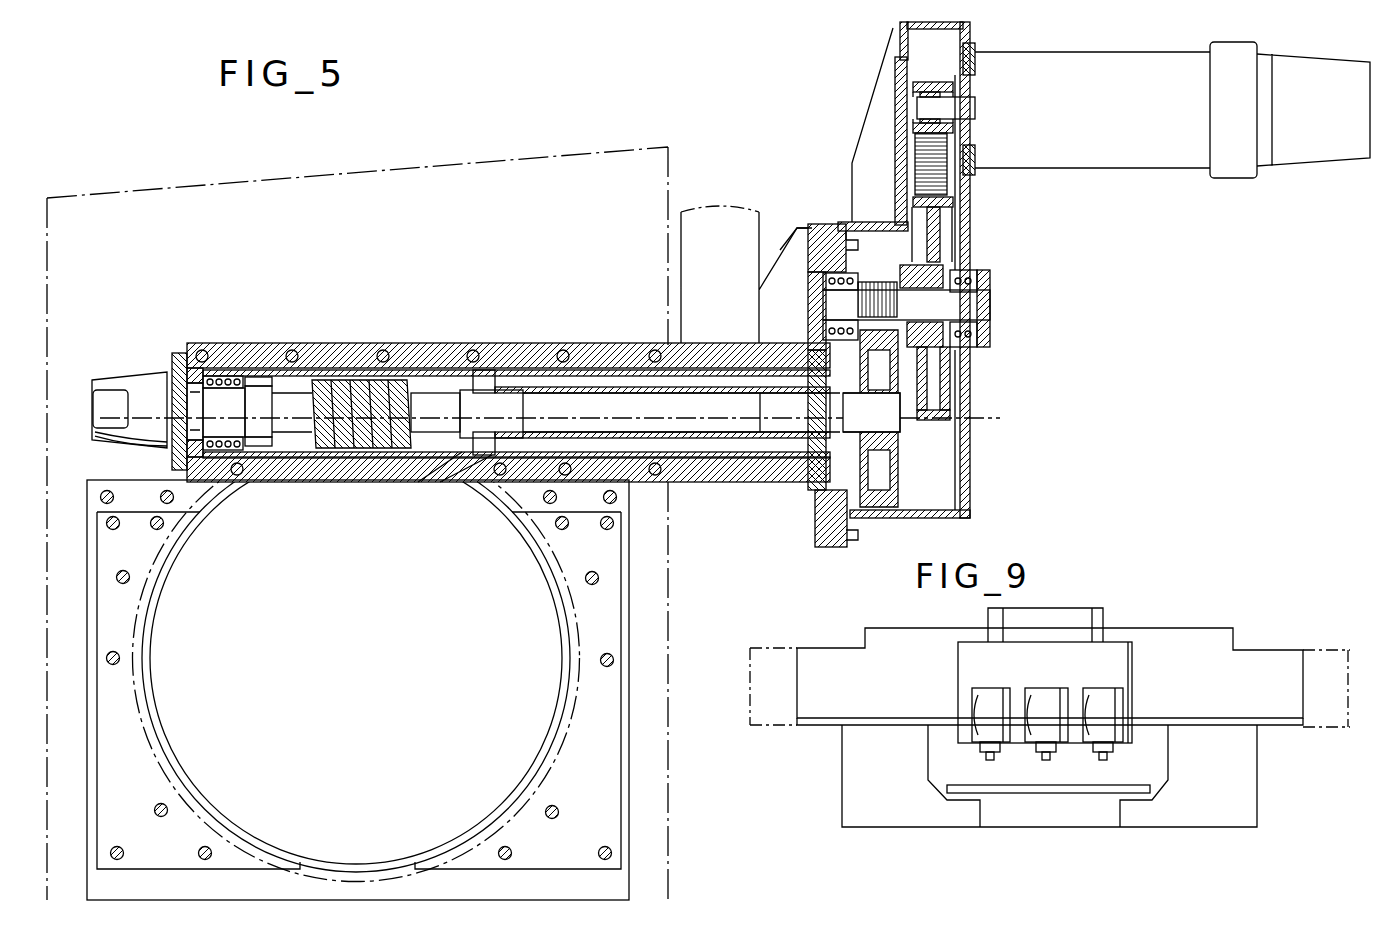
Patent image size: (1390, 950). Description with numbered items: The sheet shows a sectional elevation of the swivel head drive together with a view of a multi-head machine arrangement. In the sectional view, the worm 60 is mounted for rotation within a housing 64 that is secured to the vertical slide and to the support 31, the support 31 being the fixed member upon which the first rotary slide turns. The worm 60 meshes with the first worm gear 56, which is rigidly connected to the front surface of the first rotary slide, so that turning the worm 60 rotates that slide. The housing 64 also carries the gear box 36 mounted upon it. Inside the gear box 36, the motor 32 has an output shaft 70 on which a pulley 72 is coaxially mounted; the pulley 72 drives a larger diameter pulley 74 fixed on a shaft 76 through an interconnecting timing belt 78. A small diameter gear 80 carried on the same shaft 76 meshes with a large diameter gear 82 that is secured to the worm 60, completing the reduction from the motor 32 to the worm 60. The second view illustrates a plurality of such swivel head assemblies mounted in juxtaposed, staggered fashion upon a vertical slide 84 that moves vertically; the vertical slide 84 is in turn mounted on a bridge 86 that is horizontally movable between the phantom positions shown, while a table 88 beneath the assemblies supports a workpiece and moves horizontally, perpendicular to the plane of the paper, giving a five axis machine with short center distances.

In FIG. 5, the support 31 is at (600, 782).
In FIG. 5, the motor 32 is at (1154, 125).
In FIG. 5, the gear box 36 is at (965, 462).
In FIG. 5, the first worm gear 56 is at (573, 620).
In FIG. 5, the worm 60 is at (440, 398).
In FIG. 5, the housing 64 is at (345, 358).
In FIG. 5, the output shaft 70 is at (965, 108).
In FIG. 5, the pulley 72 is at (935, 90).
In FIG. 5, the larger diameter pulley 74 is at (933, 384).
In FIG. 5, the shaft 76 is at (940, 302).
In FIG. 5, the timing belt 78 is at (930, 167).
In FIG. 5, the small diameter gear 80 is at (882, 282).
In FIG. 5, the large diameter gear 82 is at (880, 470).
In FIG. 9, the vertical slide 84 is at (1097, 660).
In FIG. 9, the bridge 86 is at (1175, 643).
In FIG. 9, the table 88 is at (1060, 793).